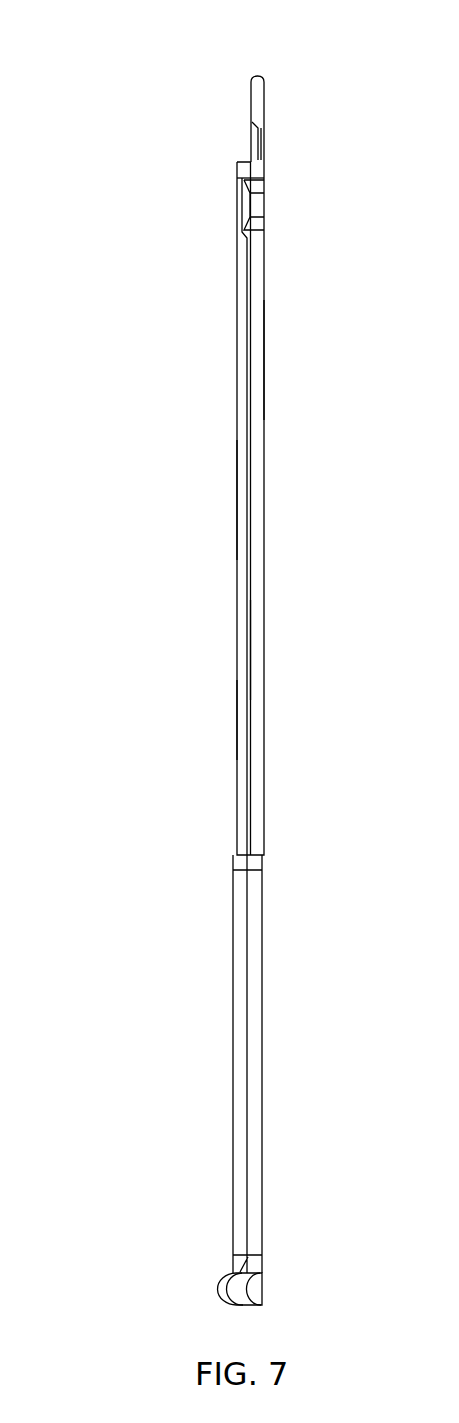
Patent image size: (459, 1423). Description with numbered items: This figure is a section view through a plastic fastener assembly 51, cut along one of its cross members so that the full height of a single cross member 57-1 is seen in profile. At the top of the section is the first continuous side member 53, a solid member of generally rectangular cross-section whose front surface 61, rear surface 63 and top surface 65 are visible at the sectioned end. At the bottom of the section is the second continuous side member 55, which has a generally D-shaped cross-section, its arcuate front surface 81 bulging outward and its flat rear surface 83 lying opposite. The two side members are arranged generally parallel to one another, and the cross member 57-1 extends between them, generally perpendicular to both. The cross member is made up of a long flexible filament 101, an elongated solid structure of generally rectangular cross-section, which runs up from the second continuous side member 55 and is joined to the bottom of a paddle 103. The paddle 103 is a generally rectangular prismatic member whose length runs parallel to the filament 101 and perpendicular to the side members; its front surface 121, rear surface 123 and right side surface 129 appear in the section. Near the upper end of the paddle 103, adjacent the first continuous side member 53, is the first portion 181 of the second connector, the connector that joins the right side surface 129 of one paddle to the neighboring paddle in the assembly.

The plastic fastener assembly 51 is at (117, 127).
The first continuous side member 53 is at (218, 107).
The second continuous side member 55 is at (204, 1292).
The cross member 57-1 is at (167, 723).
The front surface 61 is at (250, 106).
The rear surface 63 is at (265, 110).
The top surface 65 is at (257, 76).
The arcuate front surface 81 is at (221, 1276).
The flat rear surface 83 is at (263, 1291).
The flexible filament 101 is at (278, 1058).
The paddle 103 is at (298, 537).
The front surface 121 is at (237, 497).
The rear surface 123 is at (264, 360).
The right side surface 129 is at (251, 653).
The first portion 181 is at (275, 200).